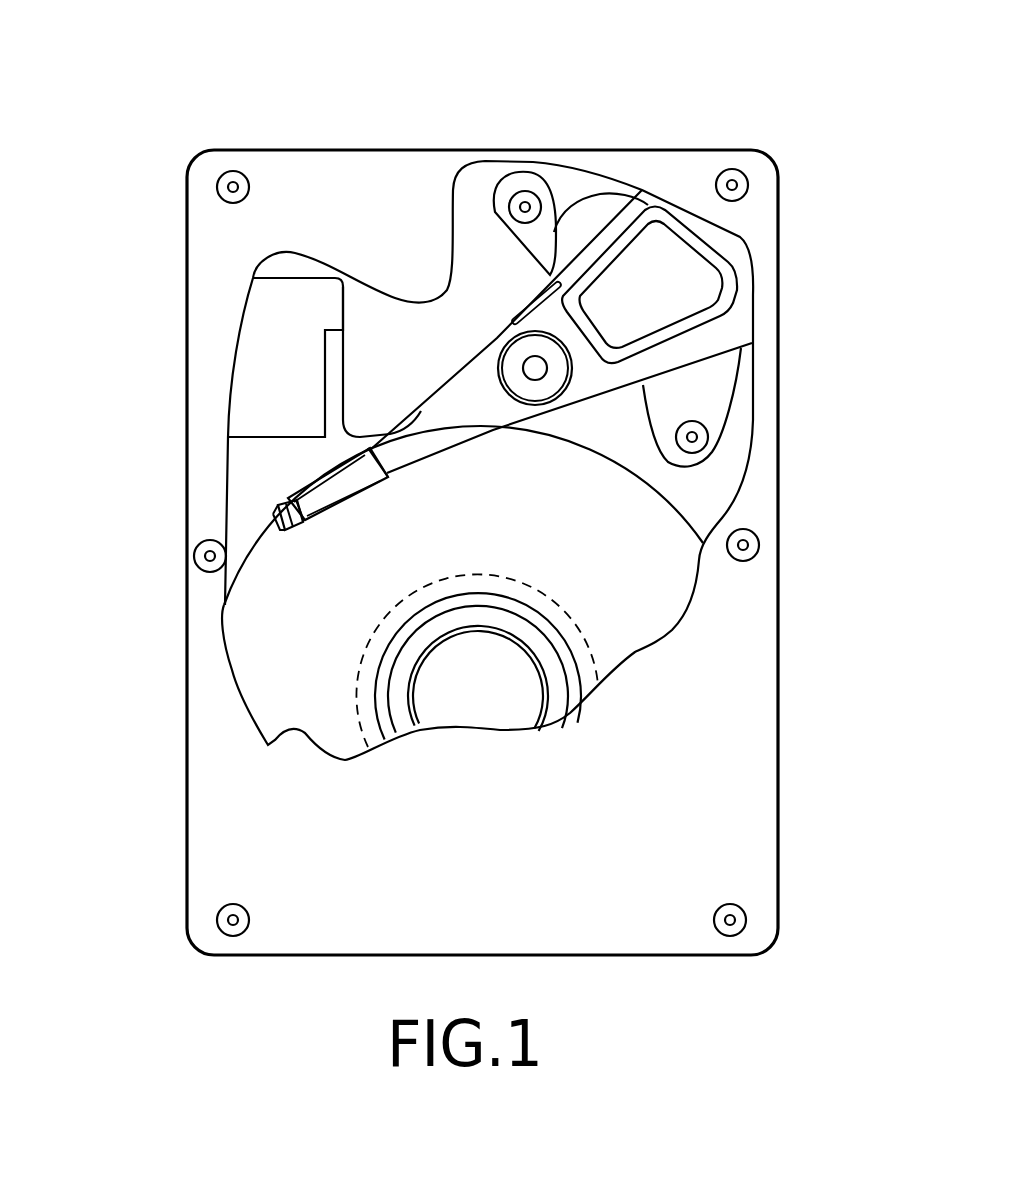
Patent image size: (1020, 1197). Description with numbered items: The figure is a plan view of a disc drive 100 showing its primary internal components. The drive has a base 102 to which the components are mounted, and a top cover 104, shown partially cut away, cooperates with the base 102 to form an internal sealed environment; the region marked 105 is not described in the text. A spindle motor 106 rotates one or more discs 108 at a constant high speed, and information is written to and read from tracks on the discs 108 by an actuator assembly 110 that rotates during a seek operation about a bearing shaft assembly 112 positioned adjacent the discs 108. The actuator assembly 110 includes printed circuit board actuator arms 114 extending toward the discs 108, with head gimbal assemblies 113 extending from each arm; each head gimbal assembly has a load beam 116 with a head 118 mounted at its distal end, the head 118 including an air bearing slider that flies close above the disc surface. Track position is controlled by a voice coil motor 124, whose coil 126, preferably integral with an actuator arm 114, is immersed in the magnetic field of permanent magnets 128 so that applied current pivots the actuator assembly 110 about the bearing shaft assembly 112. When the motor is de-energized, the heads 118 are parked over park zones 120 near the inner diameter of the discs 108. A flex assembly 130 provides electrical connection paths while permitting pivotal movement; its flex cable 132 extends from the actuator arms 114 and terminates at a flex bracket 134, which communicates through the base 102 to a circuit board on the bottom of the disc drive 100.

The disc drive 100 is at (228, 108).
The base 102 is at (258, 498).
The top cover 104 is at (235, 793).
The cover 105 is at (716, 498).
The spindle motor 106 is at (478, 703).
The discs 108 is at (646, 610).
The actuator assembly 110 is at (515, 450).
The bearing shaft assembly 112 is at (555, 385).
The head gimbal assemblies 113 is at (340, 531).
The printed circuit board actuator arms 114 is at (465, 430).
The load beam 116 is at (335, 493).
The head 118 is at (275, 528).
The park zones 120 is at (362, 676).
The voice coil motor 124 is at (568, 156).
The coil 126 is at (717, 283).
The permanent magnets 128 is at (568, 237).
The flex assembly 130 is at (222, 281).
The flex cable 132 is at (447, 370).
The flex bracket 134 is at (275, 372).